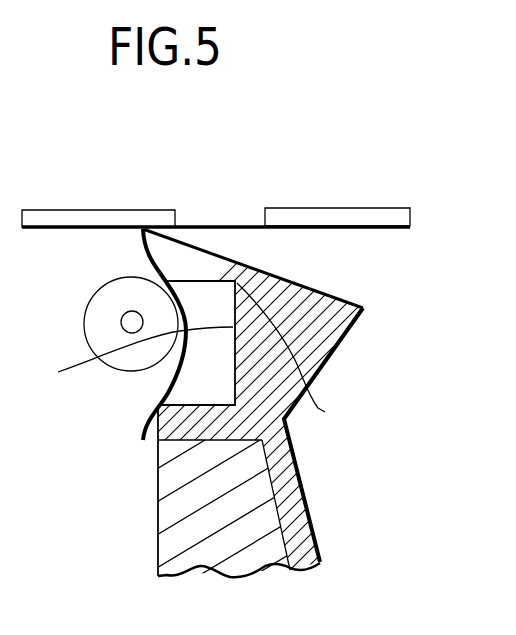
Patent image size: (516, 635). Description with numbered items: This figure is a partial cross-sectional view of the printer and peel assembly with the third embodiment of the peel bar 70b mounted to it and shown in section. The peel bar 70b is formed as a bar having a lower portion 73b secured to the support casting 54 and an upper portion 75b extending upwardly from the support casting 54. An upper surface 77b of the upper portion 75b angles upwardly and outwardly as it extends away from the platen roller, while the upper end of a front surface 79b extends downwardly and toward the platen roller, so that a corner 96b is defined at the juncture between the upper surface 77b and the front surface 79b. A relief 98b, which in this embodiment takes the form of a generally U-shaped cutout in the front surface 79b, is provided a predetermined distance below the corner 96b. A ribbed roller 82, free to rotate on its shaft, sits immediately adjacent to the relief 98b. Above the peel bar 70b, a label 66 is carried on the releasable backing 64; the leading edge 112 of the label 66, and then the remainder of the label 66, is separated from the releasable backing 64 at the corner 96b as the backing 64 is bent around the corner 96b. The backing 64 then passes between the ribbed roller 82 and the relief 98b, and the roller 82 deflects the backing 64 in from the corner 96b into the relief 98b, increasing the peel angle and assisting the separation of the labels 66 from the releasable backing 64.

The support casting 54 is at (200, 540).
The releasable backing 64 is at (166, 398).
The label 66 is at (100, 210).
The peel bar 70b is at (294, 455).
The lower portion 73b is at (320, 545).
The upper portion 75b is at (316, 333).
The upper surface 77b is at (312, 290).
The front surface 79b is at (147, 258).
The ribbed roller 82 is at (84, 322).
The corner 96b is at (302, 357).
The relief 98b is at (120, 358).
The leading edge 112 is at (22, 218).